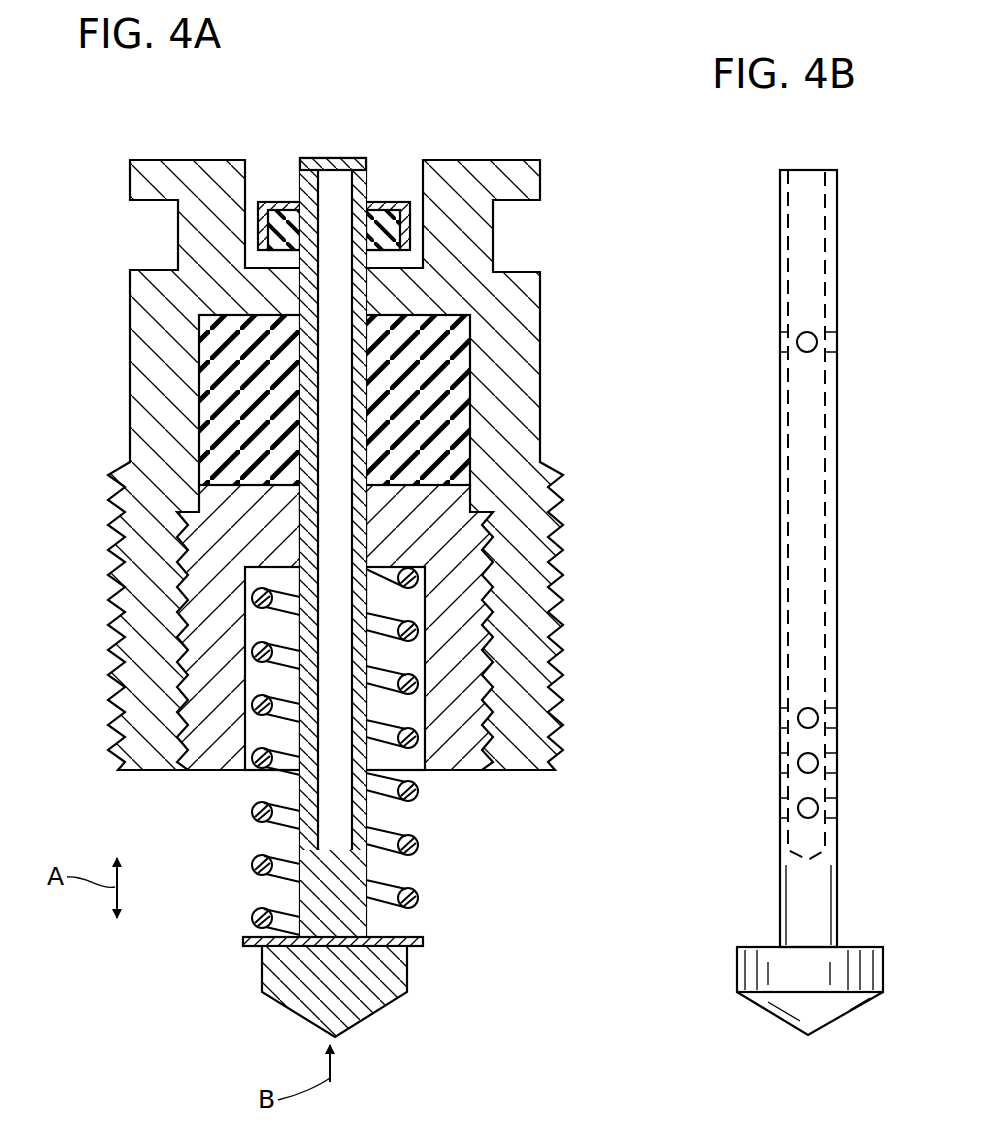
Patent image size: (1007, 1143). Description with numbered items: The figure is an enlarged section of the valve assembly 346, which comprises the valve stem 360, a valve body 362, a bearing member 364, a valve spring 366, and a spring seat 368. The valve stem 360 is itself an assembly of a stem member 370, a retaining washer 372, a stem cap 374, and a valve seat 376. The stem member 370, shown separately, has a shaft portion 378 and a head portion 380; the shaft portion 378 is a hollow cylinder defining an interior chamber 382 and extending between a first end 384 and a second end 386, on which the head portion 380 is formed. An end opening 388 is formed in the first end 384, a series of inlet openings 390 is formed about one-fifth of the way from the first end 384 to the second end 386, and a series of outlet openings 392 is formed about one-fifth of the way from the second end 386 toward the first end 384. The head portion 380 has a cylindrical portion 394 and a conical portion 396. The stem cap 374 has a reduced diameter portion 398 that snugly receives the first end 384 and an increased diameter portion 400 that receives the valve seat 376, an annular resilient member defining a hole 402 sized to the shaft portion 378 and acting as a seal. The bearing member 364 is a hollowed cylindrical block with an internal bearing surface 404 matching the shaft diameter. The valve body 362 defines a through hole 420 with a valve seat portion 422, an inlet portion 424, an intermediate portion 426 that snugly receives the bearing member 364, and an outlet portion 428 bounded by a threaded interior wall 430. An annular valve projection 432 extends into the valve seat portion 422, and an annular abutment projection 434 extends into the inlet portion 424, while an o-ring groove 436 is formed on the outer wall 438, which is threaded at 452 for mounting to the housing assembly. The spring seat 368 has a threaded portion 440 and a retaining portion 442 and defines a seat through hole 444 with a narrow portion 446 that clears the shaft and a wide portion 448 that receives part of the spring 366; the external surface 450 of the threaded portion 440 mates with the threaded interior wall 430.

In FIG. 4A, the valve assembly 346 is at (137, 143).
In FIG. 4A, the valve stem 360 is at (434, 952).
In FIG. 4A, the valve body 362 is at (525, 314).
In FIG. 4A, the bearing member 364 is at (348, 405).
In FIG. 4A, the valve spring 366 is at (414, 841).
In FIG. 4A, the spring seat 368 is at (208, 772).
In FIG. 4A, the stem member 370 is at (385, 1022).
In FIG. 4B, the stem member 370 is at (750, 1009).
In FIG. 4A, the retaining washer 372 is at (419, 948).
In FIG. 4A, the stem cap 374 is at (370, 165).
In FIG. 4A, the valve seat 376 is at (403, 212).
In FIG. 4B, the shaft portion 378 is at (772, 404).
In FIG. 4B, the head portion 380 is at (736, 960).
In FIG. 4B, the interior chamber 382 is at (800, 452).
In FIG. 4B, the first end 384 is at (804, 166).
In FIG. 4B, the second end 386 is at (766, 927).
In FIG. 4B, the end opening 388 is at (798, 175).
In FIG. 4A, the inlet openings 390 is at (445, 373).
In FIG. 4B, the inlet openings 390 is at (803, 333).
In FIG. 4A, the outlet openings 392 is at (300, 830).
In FIG. 4B, the outlet openings 392 is at (800, 808).
In FIG. 4B, the cylindrical portion 394 is at (748, 985).
In FIG. 4B, the conical portion 396 is at (798, 1012).
In FIG. 4A, the reduced diameter portion 398 is at (290, 173).
In FIG. 4A, the increased diameter portion 400 is at (263, 196).
In FIG. 4A, the hole 402 is at (385, 213).
In FIG. 4A, the bearing surface 404 is at (335, 436).
In FIG. 4A, the through hole 420 is at (430, 782).
In FIG. 4A, the valve seat portion 422 is at (413, 205).
In FIG. 4A, the inlet portion 424 is at (378, 274).
In FIG. 4A, the intermediate portion 426 is at (520, 452).
In FIG. 4A, the outlet portion 428 is at (432, 648).
In FIG. 4A, the threaded interior wall 430 is at (470, 672).
In FIG. 4A, the annular valve projection 432 is at (298, 258).
In FIG. 4A, the annular abutment projection 434 is at (300, 303).
In FIG. 4A, the o-ring groove 436 is at (512, 247).
In FIG. 4A, the outer wall 438 is at (543, 335).
In FIG. 4A, the threaded portion 440 is at (448, 693).
In FIG. 4A, the retaining portion 442 is at (440, 497).
In FIG. 4A, the seat through hole 444 is at (386, 777).
In FIG. 4A, the narrow portion 446 is at (475, 520).
In FIG. 4A, the wide portion 448 is at (455, 605).
In FIG. 4A, the external surface 450 is at (495, 728).
In FIG. 4A, the threads 452 is at (560, 597).